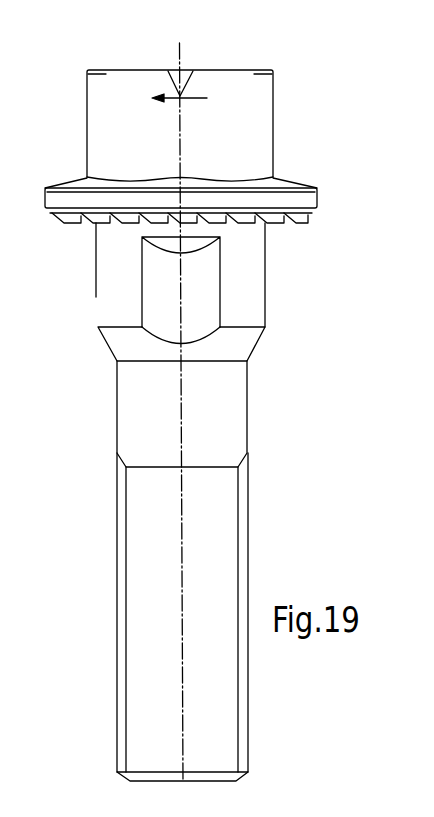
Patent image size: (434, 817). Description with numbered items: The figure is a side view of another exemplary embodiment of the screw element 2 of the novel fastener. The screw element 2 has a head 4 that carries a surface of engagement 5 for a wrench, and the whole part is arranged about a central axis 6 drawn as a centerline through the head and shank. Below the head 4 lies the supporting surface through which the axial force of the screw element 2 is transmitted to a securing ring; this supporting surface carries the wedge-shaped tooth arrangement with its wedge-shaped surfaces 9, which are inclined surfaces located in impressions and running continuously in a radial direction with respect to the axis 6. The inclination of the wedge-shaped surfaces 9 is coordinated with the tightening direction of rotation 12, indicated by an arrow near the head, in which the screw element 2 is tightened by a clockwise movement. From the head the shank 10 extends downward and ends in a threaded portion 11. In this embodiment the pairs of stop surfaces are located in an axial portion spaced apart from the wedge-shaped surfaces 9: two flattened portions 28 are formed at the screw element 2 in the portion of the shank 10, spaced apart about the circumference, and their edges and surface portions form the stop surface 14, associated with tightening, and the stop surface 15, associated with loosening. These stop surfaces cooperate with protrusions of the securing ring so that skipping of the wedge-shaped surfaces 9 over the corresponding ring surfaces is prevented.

The screw element 2 is at (203, 235).
The head 4 is at (190, 100).
The surface of engagement 5 is at (227, 105).
The axis 6 is at (193, 72).
The wedge-shaped surfaces 9 is at (227, 223).
The shank 10 is at (227, 405).
The threaded portion 11 is at (242, 528).
The tightening direction of rotation 12 is at (177, 97).
The stop surface 14 is at (222, 273).
The stop surface 15 is at (147, 276).
The flattened portions 28 is at (200, 295).